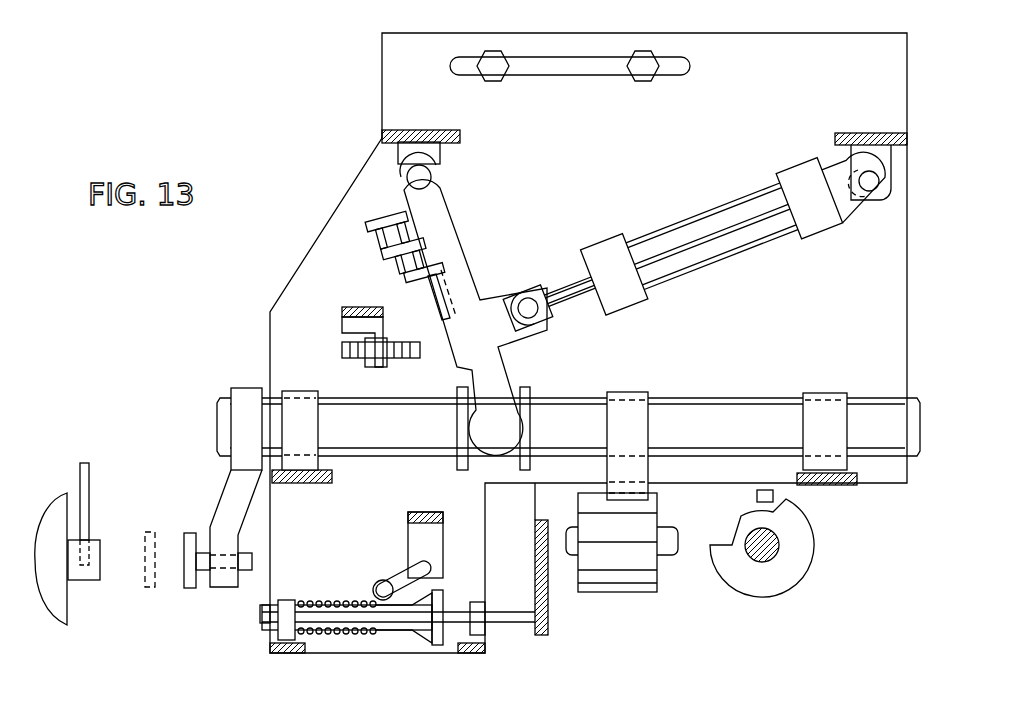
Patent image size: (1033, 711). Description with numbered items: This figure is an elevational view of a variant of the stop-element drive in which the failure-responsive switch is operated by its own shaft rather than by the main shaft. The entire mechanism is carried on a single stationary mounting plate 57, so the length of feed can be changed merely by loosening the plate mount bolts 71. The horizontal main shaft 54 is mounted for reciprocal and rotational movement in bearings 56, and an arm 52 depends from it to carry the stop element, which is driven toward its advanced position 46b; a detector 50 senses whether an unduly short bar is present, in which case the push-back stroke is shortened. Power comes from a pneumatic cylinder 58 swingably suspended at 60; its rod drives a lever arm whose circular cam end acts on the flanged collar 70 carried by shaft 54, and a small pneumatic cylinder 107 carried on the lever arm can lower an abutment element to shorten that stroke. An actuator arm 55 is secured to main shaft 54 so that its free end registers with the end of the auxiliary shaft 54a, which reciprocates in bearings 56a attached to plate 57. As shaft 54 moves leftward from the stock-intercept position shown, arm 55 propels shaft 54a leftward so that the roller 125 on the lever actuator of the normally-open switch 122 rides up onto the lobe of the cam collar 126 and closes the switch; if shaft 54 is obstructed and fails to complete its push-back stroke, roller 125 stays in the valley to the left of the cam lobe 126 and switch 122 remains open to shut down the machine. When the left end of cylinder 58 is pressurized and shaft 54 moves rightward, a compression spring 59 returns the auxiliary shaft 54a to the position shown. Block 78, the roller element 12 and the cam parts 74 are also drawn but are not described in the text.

The plate mount bolts 71 is at (500, 50).
The swingable suspension 60 is at (875, 198).
The stationary mounting plate 57 is at (300, 278).
The small pneumatic cylinder 107 is at (375, 238).
The pneumatic cylinder 58 is at (700, 272).
The bearings 56 is at (297, 387).
The flanged collar 70 is at (527, 385).
The block 78 is at (635, 390).
The horizontal shaft 54 is at (365, 458).
The detector 50 is at (90, 468).
The block 12 is at (95, 540).
The arm 52 is at (222, 500).
The stop element position 46b is at (153, 585).
The auxiliary shaft 54a is at (515, 632).
The bearings 56a is at (285, 602).
The compression spring 59 is at (345, 655).
The cam collar 126 is at (425, 650).
The roller 125 is at (385, 578).
The normally-open switch 122 is at (410, 532).
The actuator arm 55 is at (552, 598).
The cam 74 is at (660, 590).